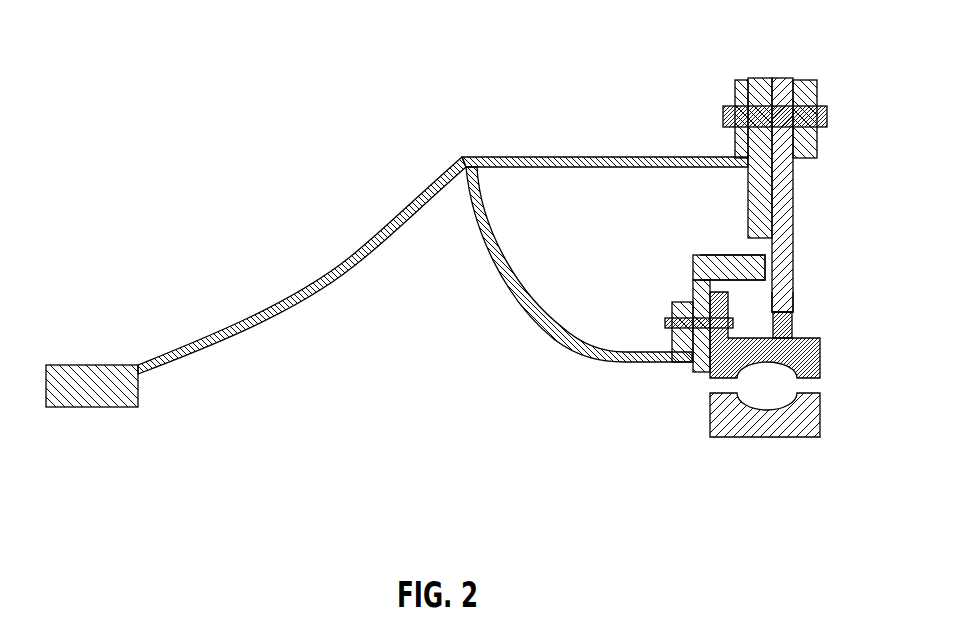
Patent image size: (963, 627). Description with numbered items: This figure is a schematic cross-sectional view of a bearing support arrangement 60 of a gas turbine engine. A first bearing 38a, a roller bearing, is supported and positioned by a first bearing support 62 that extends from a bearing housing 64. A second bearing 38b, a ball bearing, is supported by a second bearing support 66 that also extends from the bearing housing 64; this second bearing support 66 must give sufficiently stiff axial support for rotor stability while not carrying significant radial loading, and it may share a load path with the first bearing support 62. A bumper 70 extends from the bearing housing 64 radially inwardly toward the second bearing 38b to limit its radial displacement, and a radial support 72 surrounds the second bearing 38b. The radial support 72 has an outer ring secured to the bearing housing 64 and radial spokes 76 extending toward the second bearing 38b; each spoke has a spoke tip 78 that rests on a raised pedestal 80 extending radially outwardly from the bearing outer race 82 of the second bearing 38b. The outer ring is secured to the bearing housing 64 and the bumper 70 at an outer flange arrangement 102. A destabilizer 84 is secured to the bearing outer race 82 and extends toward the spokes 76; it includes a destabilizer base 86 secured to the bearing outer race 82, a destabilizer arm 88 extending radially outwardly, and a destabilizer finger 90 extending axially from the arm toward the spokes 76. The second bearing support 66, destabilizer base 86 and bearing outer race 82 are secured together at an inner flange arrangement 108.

The bearing support arrangement 60 is at (138, 50).
The first bearing support 62 is at (247, 318).
The bearing housing 64 is at (560, 152).
The second bearing support 66 is at (537, 332).
The bumper 70 is at (740, 85).
The radial support 72 is at (782, 85).
The radial spokes 76 is at (777, 205).
The spoke tip 78 is at (788, 298).
The raised pedestal 80 is at (792, 330).
The bearing outer race 82 is at (810, 357).
The destabilizer 84 is at (693, 278).
The destabilizer base 86 is at (700, 373).
The destabilizer arm 88 is at (670, 320).
The destabilizer finger 90 is at (745, 270).
The outer flange arrangement 102 is at (833, 65).
The inner flange arrangement 108 is at (660, 372).
The first bearing 38a is at (93, 390).
The second bearing 38b is at (735, 415).